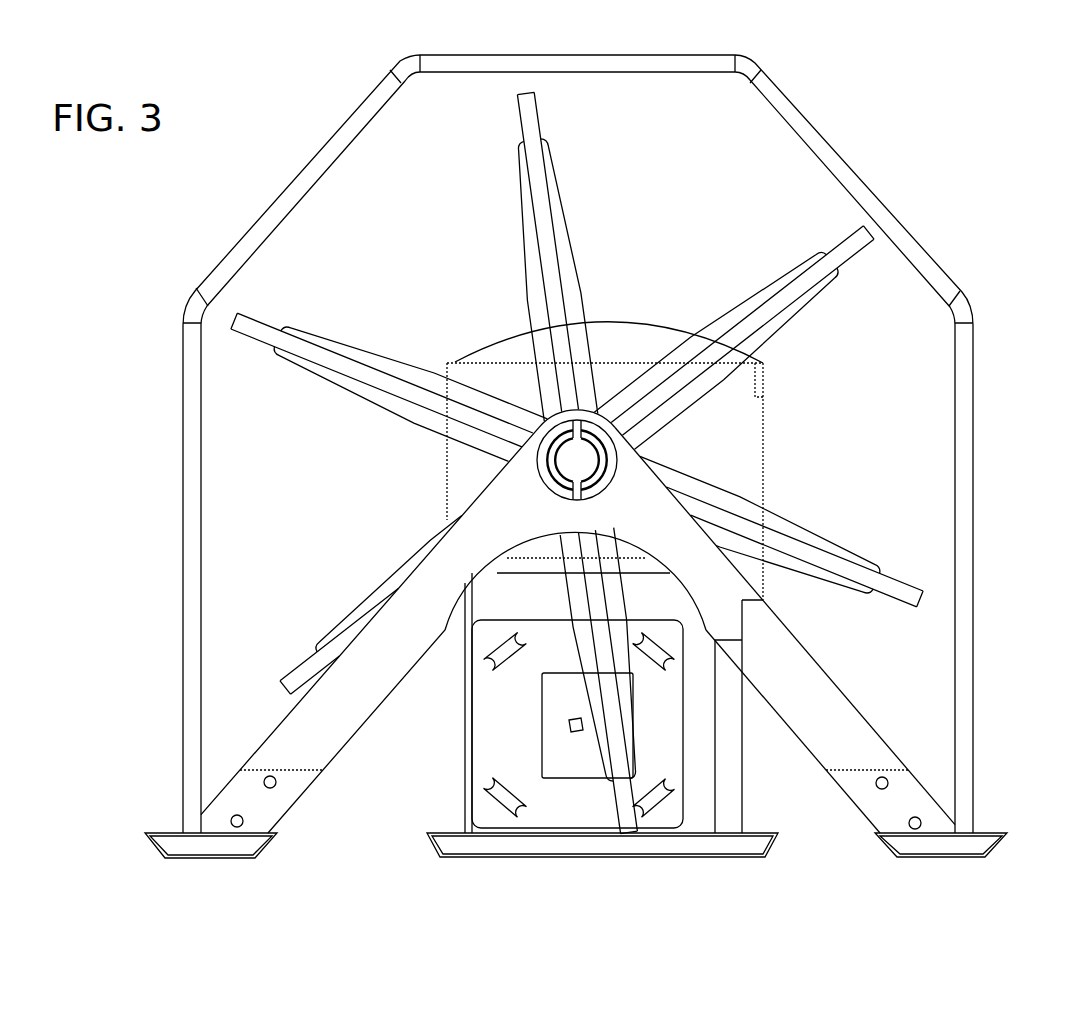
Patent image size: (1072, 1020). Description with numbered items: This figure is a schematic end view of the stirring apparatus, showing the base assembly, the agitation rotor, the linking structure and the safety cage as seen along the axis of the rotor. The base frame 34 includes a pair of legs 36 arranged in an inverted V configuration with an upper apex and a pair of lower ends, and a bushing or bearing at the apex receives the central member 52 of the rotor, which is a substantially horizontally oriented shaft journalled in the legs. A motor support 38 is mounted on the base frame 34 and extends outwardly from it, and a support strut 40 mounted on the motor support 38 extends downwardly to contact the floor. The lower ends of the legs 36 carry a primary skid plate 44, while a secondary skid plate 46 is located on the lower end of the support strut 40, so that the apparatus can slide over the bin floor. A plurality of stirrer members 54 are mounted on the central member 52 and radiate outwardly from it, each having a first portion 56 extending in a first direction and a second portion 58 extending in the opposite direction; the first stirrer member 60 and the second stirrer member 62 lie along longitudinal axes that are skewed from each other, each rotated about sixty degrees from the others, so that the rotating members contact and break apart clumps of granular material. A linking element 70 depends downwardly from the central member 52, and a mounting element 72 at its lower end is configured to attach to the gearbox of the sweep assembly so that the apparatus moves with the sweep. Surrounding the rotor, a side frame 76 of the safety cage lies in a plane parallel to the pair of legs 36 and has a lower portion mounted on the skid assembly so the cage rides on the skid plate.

The base frame 34 is at (498, 508).
The legs 36 is at (825, 708).
The motor support 38 is at (748, 440).
The support strut 40 is at (732, 760).
The primary skid plate 44 is at (978, 840).
The secondary skid plate 46 is at (750, 847).
The central member 52 is at (575, 460).
The stirrer members 54 is at (763, 290).
The first portion 56 is at (335, 340).
The second portion 58 is at (808, 528).
The first stirrer member 60 is at (523, 245).
The second stirrer member 62 is at (350, 385).
The linking element 70 is at (563, 653).
The mounting element 72 is at (500, 742).
The side frame 76 is at (965, 622).